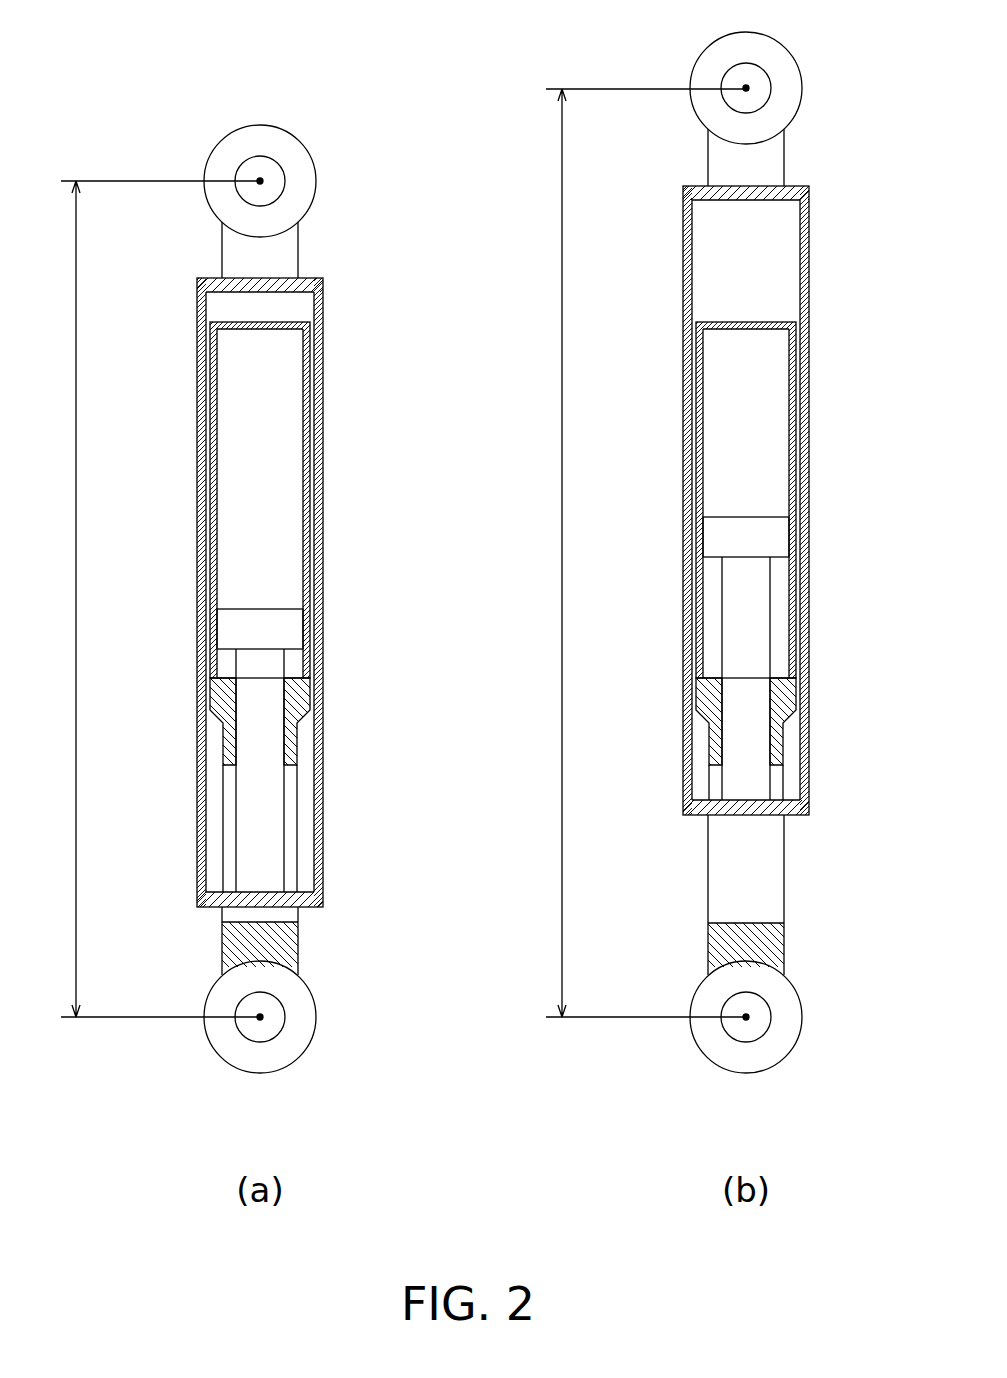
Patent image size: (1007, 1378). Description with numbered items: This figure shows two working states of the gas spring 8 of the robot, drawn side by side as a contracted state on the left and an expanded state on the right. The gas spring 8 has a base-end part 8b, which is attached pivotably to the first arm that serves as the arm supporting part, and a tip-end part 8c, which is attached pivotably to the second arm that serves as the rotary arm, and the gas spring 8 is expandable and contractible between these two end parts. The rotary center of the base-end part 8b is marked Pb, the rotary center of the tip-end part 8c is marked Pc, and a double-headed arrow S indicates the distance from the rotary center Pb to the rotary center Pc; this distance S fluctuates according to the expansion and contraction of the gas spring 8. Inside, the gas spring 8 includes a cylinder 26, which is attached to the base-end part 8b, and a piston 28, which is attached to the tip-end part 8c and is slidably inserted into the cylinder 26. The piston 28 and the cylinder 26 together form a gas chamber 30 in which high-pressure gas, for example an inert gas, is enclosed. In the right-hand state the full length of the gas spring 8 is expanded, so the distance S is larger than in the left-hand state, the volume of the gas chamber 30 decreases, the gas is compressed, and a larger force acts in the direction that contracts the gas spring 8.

The gas spring 8 is at (559, 536).
The tip-end part 8c is at (292, 150).
The base-end part 8b is at (298, 992).
The rotary center of the tip-end part Pc is at (262, 181).
The rotary center of the base-end part Pb is at (262, 1017).
The cylinder 26 is at (318, 428).
The gas chamber 30 is at (290, 495).
The piston 28 is at (278, 631).
The distance S is at (400, 553).